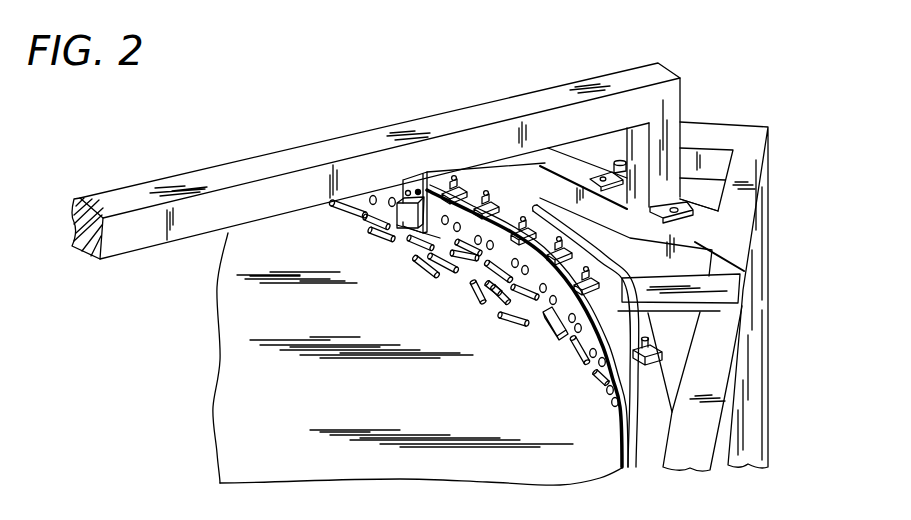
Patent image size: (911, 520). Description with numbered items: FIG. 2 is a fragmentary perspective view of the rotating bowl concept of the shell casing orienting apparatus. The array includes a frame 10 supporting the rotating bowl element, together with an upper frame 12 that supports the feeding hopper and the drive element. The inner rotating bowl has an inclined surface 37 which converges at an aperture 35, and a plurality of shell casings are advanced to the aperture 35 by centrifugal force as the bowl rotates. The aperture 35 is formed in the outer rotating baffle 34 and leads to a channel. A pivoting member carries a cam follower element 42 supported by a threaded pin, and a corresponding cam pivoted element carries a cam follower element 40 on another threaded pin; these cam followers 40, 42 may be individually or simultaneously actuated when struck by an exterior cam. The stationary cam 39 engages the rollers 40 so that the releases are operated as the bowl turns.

The frame 10 is at (726, 132).
The upper frame 12 is at (425, 173).
The outer rotating baffle 34 is at (605, 375).
The aperture 35 is at (573, 344).
The inclined surface 37 is at (392, 401).
The stationary cam 39 is at (573, 216).
The cam follower element 40 is at (484, 200).
The cam follower element 42 is at (530, 191).